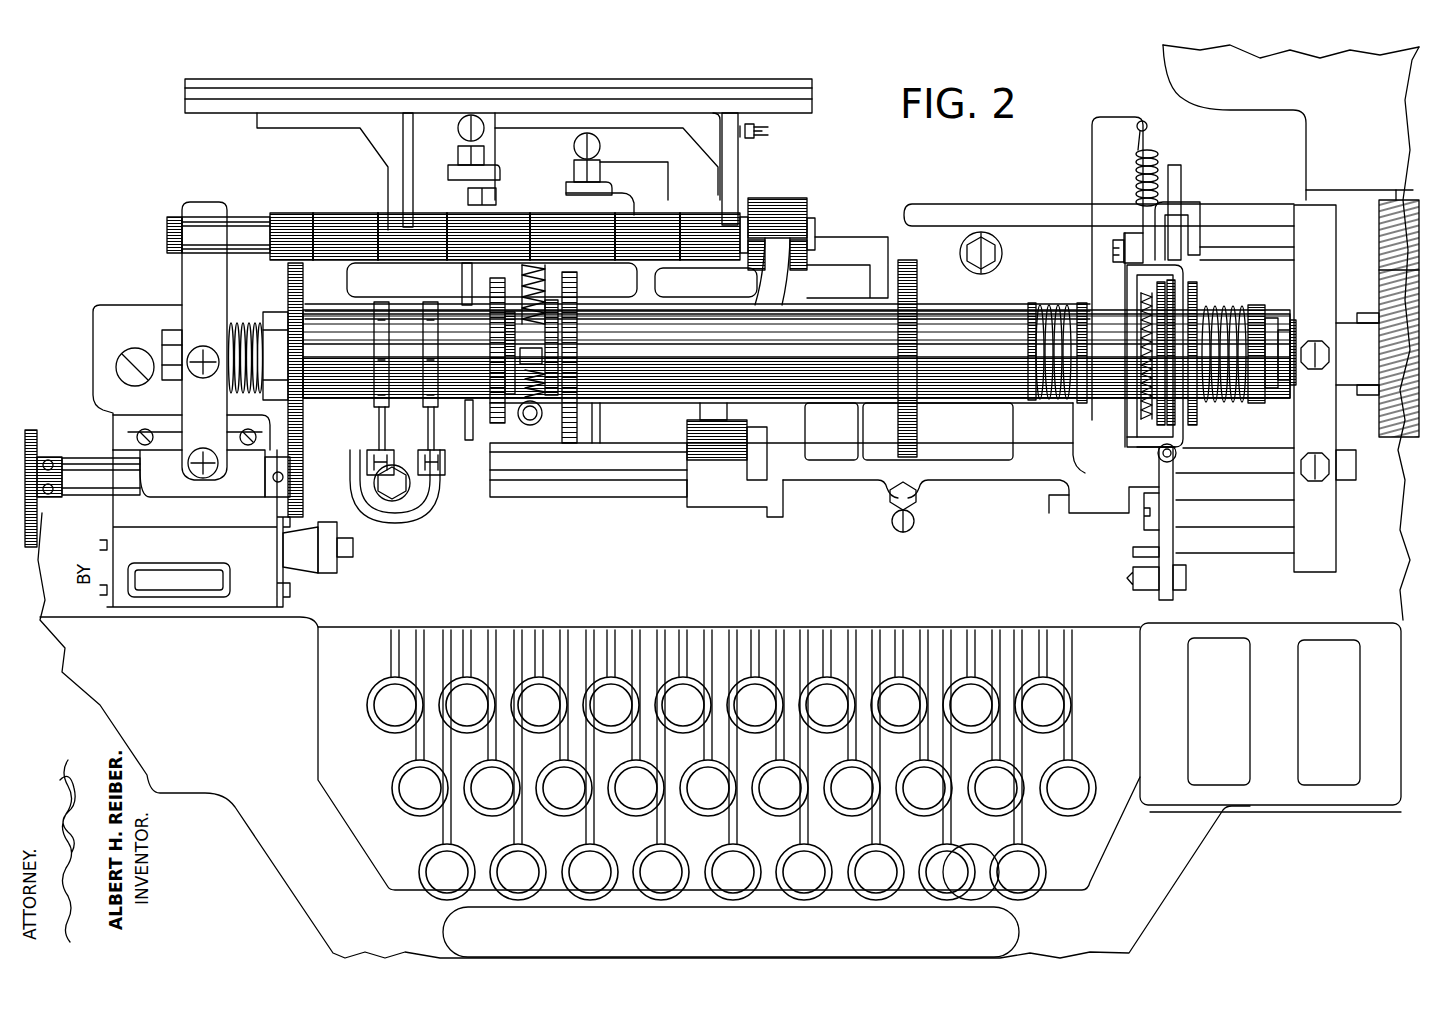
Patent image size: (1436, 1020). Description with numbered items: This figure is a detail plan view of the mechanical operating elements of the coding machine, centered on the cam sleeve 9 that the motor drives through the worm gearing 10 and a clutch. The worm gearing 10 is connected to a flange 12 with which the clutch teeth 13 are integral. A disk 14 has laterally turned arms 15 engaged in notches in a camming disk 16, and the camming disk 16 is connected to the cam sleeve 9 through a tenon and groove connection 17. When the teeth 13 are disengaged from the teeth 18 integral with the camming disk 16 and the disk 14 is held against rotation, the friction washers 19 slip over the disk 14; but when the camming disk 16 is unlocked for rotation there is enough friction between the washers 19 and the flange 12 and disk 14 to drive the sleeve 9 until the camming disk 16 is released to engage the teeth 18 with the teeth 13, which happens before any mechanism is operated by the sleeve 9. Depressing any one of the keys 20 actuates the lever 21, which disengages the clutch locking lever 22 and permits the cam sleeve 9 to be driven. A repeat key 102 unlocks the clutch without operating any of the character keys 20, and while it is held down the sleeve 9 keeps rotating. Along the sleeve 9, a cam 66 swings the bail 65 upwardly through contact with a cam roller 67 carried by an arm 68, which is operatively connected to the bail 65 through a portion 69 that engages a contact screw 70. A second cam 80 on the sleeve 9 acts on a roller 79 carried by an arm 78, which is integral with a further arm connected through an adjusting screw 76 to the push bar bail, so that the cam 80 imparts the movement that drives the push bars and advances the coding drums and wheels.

The cam sleeve 9 is at (820, 330).
The worm gearing 10 is at (1398, 437).
The flange 12 is at (1156, 293).
The clutch teeth 13 is at (1159, 295).
The disk 14 is at (1184, 275).
The laterally turned arms 15 is at (1146, 446).
The camming disk 16 is at (1131, 428).
The tenon and groove connection 17 is at (1056, 305).
The teeth 18 is at (1143, 383).
The friction washers 19 is at (1198, 297).
The keys 20 is at (793, 867).
The lever 21 is at (1169, 557).
The clutch locking lever 22 is at (1194, 203).
The bail 65 is at (755, 88).
The cam 66 is at (493, 283).
The cam roller 67 is at (522, 365).
The arm 68 is at (463, 297).
The portion 69 is at (478, 197).
The contact screw 70 is at (480, 113).
The adjusting screw 76 is at (602, 143).
The arm 78 is at (600, 282).
The roller 79 is at (547, 335).
The cam 80 is at (570, 376).
The repeat key 102 is at (978, 850).